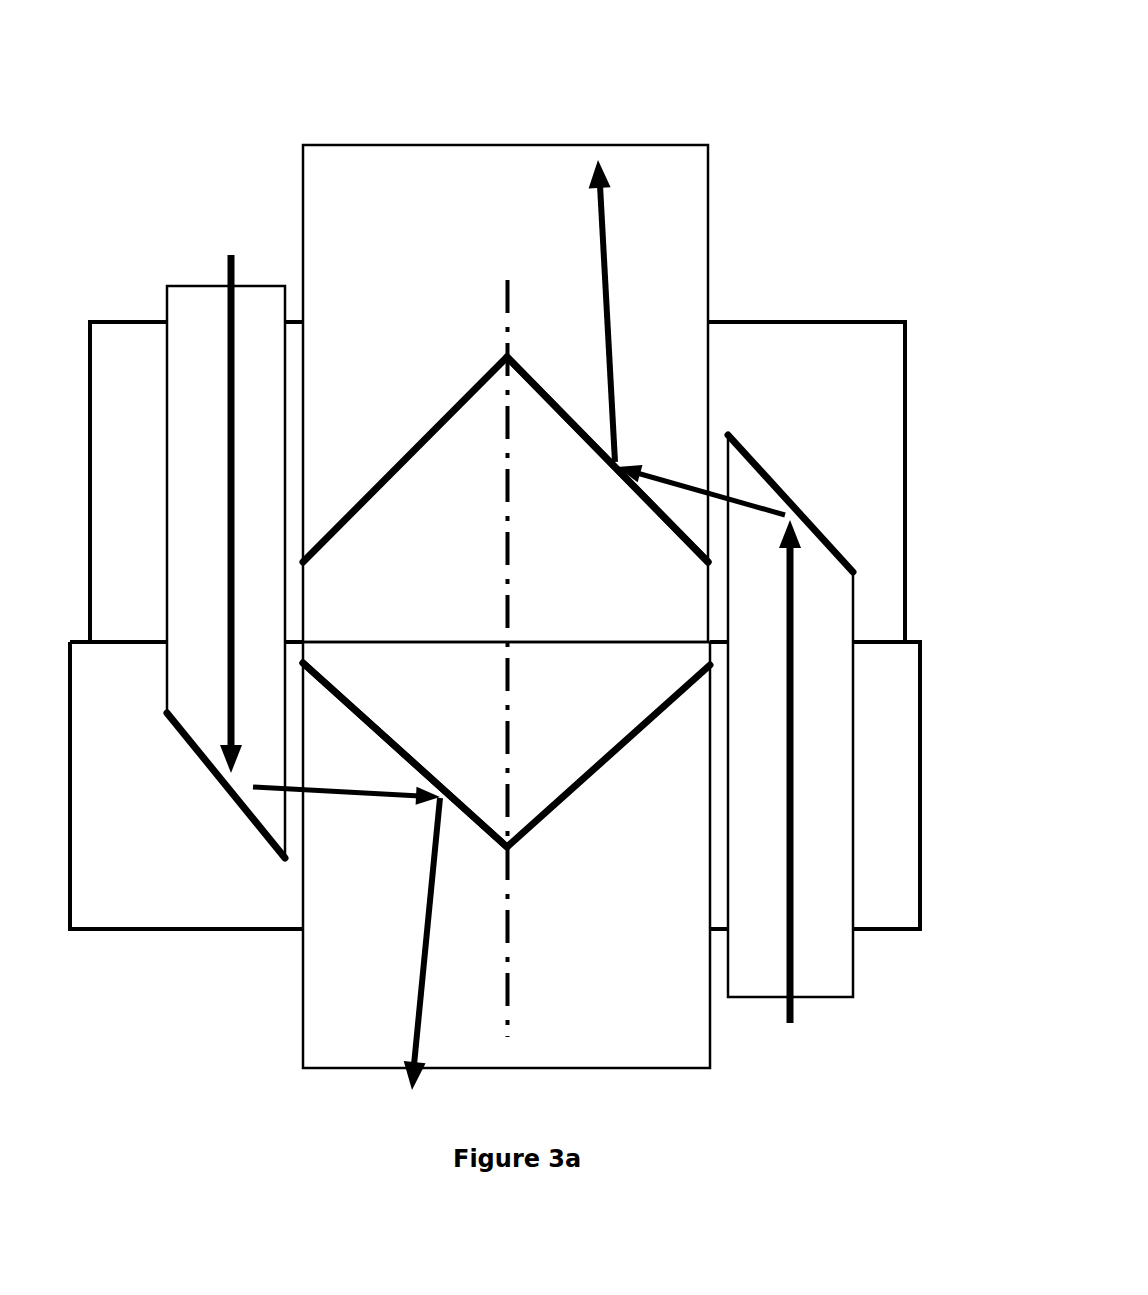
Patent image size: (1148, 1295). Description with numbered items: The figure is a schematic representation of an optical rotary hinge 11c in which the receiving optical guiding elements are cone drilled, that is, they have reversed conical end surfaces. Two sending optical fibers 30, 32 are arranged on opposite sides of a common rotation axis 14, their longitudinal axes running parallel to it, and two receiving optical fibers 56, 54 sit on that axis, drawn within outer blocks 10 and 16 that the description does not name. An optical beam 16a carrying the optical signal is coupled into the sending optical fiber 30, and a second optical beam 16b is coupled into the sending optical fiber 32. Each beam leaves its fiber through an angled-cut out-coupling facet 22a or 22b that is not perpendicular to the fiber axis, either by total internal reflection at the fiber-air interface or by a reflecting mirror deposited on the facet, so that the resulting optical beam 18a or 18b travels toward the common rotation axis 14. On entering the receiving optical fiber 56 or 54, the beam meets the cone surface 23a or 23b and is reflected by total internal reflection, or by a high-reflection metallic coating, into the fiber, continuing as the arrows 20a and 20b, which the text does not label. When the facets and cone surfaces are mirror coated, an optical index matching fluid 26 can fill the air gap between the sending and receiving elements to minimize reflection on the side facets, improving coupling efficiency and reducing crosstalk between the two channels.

The upper housing 10 is at (801, 322).
The optical rotary hinge 11c is at (764, 122).
The common rotation axis 14 is at (510, 910).
The lower housing 16 is at (140, 932).
The optical beam 16a is at (227, 490).
The optical beam 16b is at (782, 960).
The optical beam 18a is at (378, 800).
The optical beam 18b is at (690, 455).
The first output beam 20a is at (415, 987).
The second output beam 20b is at (598, 255).
The angled-cut out-coupling facet 22a is at (228, 800).
The angled-cut out-coupling facet 22b is at (765, 470).
The cone surface 23a is at (413, 750).
The cone surface 23b is at (580, 437).
The optical index matching fluid 26 is at (470, 517).
The sending optical fiber 30 is at (212, 290).
The sending optical fiber 32 is at (821, 998).
The receiving optical fiber 54 is at (472, 144).
The receiving optical fiber 56 is at (357, 1070).